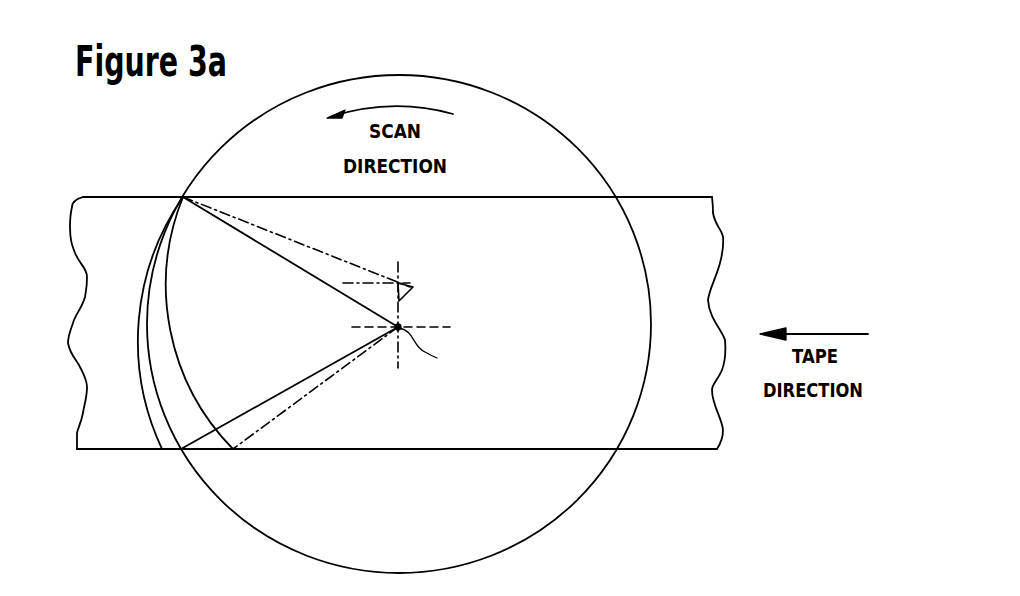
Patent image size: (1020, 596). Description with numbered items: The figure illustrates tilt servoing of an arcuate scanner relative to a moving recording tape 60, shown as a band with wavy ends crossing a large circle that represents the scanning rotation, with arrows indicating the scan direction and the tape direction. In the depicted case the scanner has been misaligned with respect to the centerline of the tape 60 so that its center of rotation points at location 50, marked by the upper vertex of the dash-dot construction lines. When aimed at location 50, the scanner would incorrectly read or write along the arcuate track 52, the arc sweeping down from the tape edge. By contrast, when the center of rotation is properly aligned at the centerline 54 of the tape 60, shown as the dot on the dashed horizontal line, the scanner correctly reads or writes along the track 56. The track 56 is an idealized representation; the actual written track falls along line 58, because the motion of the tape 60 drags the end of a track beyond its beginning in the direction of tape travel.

The location 50 is at (405, 282).
The arcuate track 52 is at (188, 377).
The centerline 54 is at (448, 327).
The track 56 is at (150, 384).
The line 58 is at (150, 420).
The tape 60 is at (681, 197).